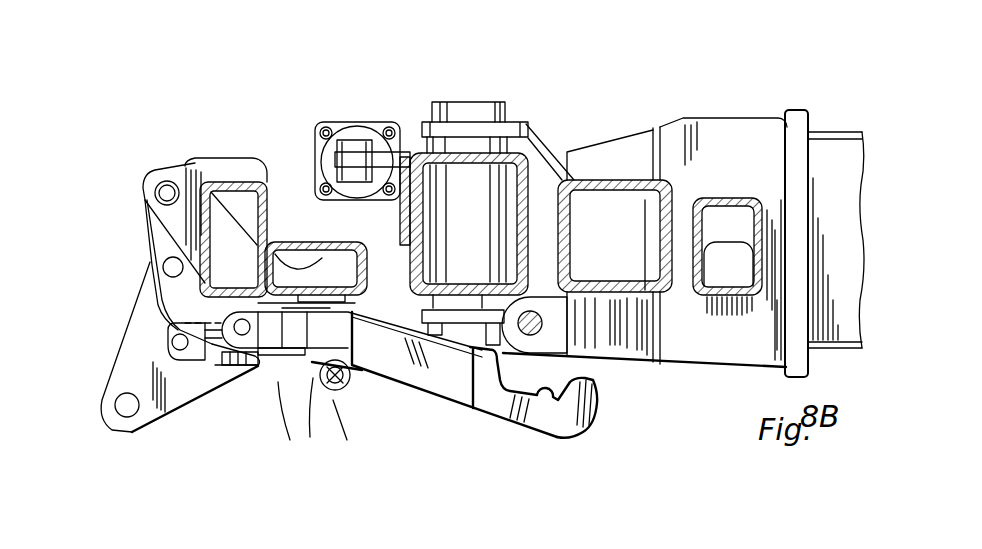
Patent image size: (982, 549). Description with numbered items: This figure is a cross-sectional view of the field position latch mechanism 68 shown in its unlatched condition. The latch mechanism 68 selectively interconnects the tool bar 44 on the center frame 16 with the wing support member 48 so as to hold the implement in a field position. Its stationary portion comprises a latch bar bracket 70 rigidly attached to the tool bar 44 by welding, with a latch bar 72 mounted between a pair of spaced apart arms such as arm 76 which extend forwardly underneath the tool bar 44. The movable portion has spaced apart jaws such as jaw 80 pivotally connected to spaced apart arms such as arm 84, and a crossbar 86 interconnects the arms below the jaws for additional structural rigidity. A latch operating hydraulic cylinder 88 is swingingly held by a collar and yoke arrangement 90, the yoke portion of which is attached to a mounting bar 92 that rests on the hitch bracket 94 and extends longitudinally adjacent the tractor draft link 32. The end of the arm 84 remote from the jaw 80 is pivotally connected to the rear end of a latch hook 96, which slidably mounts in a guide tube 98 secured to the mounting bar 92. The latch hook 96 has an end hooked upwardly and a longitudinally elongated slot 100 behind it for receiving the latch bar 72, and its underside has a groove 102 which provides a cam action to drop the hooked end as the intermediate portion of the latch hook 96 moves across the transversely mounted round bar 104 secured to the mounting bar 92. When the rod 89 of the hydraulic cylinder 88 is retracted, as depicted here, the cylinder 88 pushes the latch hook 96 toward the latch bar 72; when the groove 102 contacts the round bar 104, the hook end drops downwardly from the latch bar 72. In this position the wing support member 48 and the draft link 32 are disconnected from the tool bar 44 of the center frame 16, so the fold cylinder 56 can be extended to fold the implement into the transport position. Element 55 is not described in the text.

The center frame 16 is at (605, 178).
The tool bar 44 is at (622, 178).
The latch bar bracket 70 is at (724, 118).
The wing support member 48 is at (540, 178).
The fold cylinder 56 is at (388, 123).
The clamp block 55 is at (355, 125).
The jaw 80 is at (207, 167).
The tractor draft link 32 is at (263, 163).
The mounting bar 92 is at (180, 164).
The arm 84 is at (148, 238).
The crossbar 86 is at (163, 270).
The hitch bracket 94 is at (135, 433).
The rod 89 is at (192, 395).
The latch operating hydraulic cylinder 88 is at (298, 410).
The collar and yoke arrangement 90 is at (277, 380).
The field position latch mechanism 68 is at (310, 418).
The round bar 104 is at (382, 327).
The groove 102 is at (395, 395).
The guide tube 98 is at (400, 385).
The latch hook 96 is at (575, 433).
The longitudinally elongated slot 100 is at (547, 393).
The latch bar 72 is at (542, 328).
The arm 76 is at (690, 343).